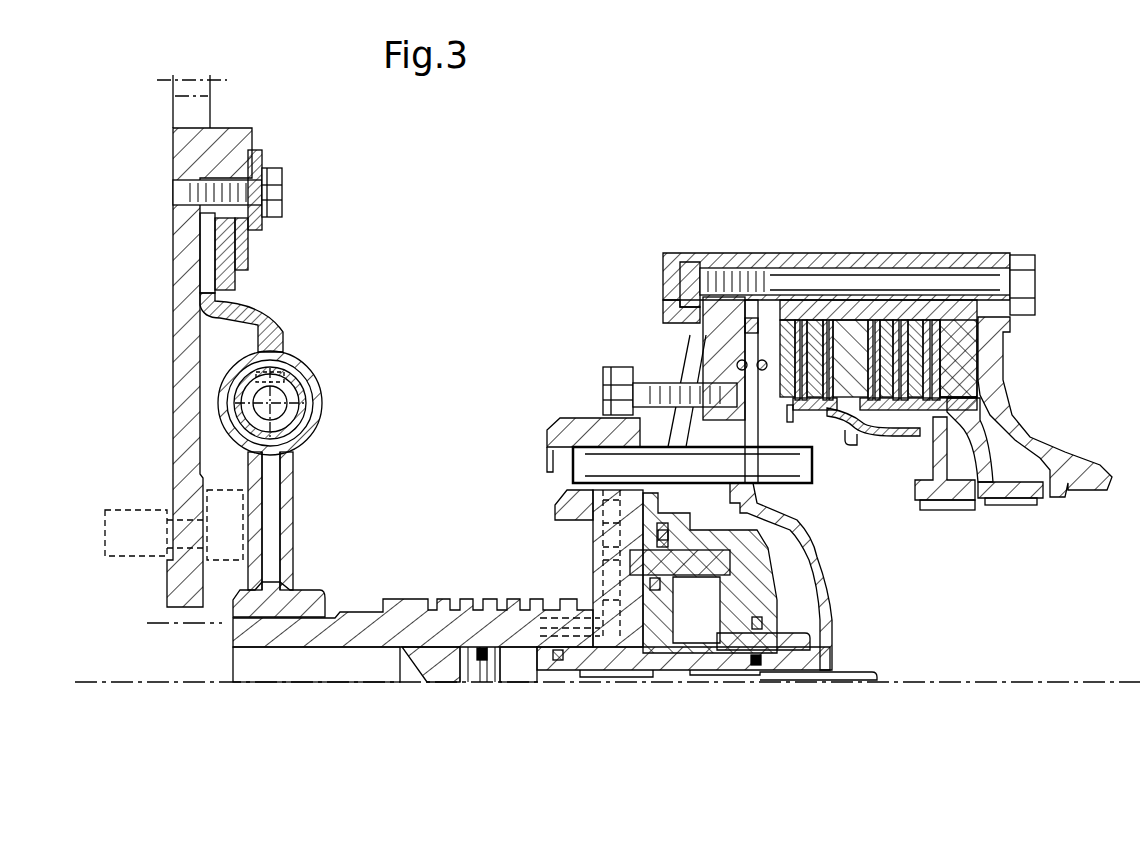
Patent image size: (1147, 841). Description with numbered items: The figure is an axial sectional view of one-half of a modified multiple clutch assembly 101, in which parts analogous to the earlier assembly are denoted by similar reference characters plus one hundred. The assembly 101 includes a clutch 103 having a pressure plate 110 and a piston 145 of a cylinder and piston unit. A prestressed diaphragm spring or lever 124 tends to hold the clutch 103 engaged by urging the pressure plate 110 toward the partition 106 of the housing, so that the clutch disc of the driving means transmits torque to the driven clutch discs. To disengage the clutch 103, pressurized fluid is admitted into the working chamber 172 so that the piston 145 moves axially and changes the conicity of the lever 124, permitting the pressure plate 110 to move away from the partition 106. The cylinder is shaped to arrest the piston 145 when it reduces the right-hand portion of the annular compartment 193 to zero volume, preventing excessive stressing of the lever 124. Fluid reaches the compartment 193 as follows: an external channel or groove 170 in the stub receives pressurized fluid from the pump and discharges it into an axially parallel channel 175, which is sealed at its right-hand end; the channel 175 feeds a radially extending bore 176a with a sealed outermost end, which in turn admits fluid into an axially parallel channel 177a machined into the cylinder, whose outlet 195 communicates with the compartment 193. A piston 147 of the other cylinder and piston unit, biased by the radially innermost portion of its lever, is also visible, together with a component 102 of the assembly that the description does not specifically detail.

The modified multiple clutch assembly 101 is at (887, 296).
The clutch housing 102 is at (938, 252).
The clutch 103 is at (826, 253).
The partition 106 is at (853, 327).
The pressure plate 110 is at (760, 318).
The diaphragm spring or lever 124 is at (710, 255).
The radially extending bore 176a is at (610, 565).
The external channel or groove 170 is at (538, 603).
The axially parallel channel or passage 175 is at (585, 620).
The working chamber 172 is at (643, 620).
The piston 145 is at (649, 600).
The axially parallel channel or bore 177a is at (707, 597).
The annular compartment 193 is at (757, 628).
The outlet 195 is at (768, 657).
The piston 147 is at (840, 620).